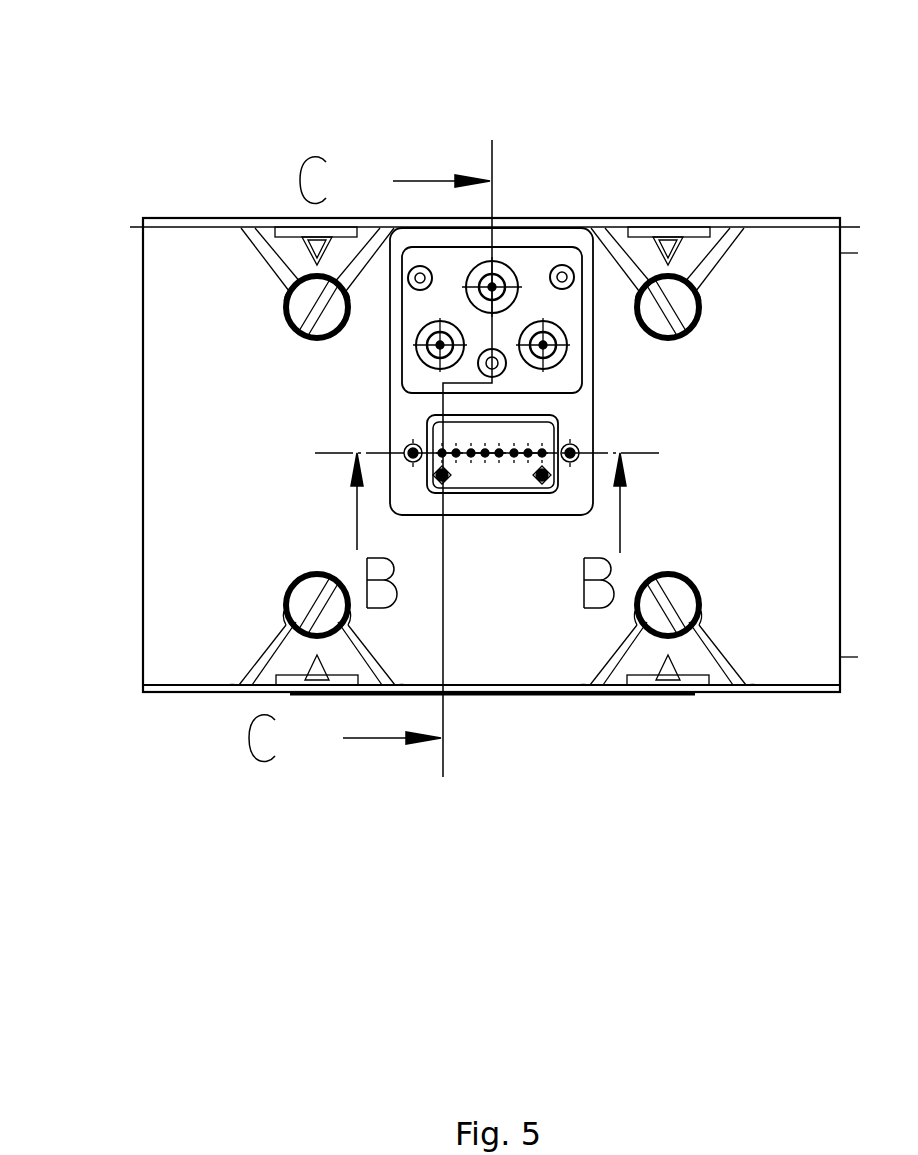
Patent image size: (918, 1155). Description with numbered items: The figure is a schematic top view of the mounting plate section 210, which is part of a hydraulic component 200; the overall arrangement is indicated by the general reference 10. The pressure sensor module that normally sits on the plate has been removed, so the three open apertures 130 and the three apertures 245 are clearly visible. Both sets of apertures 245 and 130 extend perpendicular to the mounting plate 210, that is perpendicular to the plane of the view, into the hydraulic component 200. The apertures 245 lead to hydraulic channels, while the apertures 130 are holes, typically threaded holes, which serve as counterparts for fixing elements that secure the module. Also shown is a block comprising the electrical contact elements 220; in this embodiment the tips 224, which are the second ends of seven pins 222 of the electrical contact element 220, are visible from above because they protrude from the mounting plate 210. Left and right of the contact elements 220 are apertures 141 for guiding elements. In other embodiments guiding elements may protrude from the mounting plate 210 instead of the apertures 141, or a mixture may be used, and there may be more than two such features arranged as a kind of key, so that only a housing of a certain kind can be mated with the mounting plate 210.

The connector assembly 10 is at (737, 88).
The apertures 130 is at (482, 290).
The apertures for guiding elements 141 is at (579, 451).
The hydraulic component 200 is at (143, 548).
The mounting plate section 210 is at (200, 453).
The electrical contact elements 220 is at (508, 475).
The pins 222 is at (492, 527).
The tips 224 is at (461, 456).
The apertures for fixing elements 245 is at (421, 278).